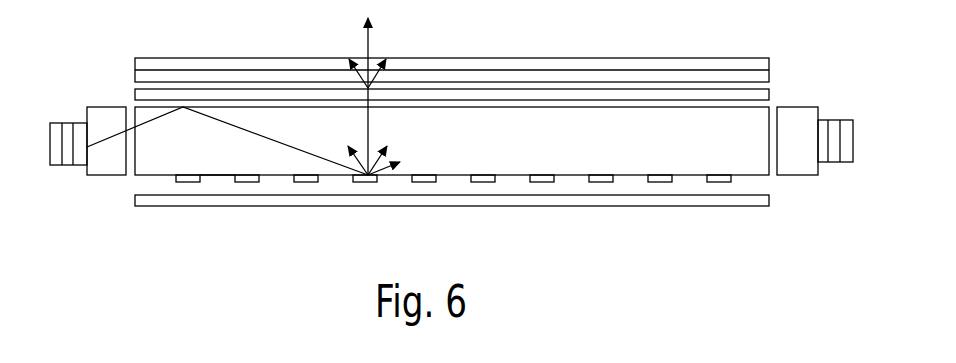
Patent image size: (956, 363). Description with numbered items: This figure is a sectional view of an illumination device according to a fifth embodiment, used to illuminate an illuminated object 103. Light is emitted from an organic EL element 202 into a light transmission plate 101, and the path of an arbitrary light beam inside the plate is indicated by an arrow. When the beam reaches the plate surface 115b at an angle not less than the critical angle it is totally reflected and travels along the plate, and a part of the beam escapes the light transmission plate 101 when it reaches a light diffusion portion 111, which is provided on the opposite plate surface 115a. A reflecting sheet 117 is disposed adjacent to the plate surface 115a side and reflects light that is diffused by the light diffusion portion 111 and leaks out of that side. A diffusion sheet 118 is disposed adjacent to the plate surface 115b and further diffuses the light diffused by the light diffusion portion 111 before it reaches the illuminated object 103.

The light transmission plate 101 is at (485, 118).
The illuminated object 103 is at (269, 62).
The light diffusion portion 111 is at (423, 182).
The plate surface 115a is at (215, 177).
The plate surface 115b is at (222, 108).
The reflecting sheet 117 is at (588, 207).
The diffusion sheet 118 is at (609, 88).
The organic EL element 202 is at (127, 195).